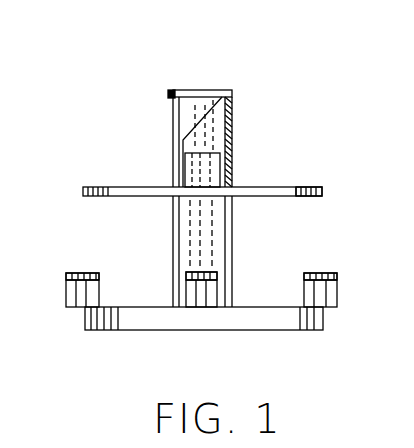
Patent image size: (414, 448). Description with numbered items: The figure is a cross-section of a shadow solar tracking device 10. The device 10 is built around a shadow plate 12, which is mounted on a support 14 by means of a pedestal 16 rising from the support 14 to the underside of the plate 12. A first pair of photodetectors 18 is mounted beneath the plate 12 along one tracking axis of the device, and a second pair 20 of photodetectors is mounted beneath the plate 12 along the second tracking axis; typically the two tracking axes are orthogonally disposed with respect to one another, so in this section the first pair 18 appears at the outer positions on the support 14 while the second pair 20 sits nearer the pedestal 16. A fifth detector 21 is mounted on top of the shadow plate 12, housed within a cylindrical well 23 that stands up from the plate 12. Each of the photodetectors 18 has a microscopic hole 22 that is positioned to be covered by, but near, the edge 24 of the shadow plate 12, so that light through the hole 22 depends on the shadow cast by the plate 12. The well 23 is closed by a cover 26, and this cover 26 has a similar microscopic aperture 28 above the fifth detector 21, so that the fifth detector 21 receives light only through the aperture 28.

The solar tracking device 10 is at (259, 60).
The shadow plate 12 is at (295, 187).
The support 14 is at (137, 318).
The pedestal 16 is at (212, 232).
The first pair of photodetectors 18 is at (67, 290).
The second pair of photodetectors 20 is at (204, 290).
The fifth detector 21 is at (207, 170).
The microscopic hole 22 is at (83, 266).
The cylindrical well 23 is at (173, 135).
The edge 24 is at (322, 191).
The cover 26 is at (168, 95).
The microscopic aperture 28 is at (201, 89).